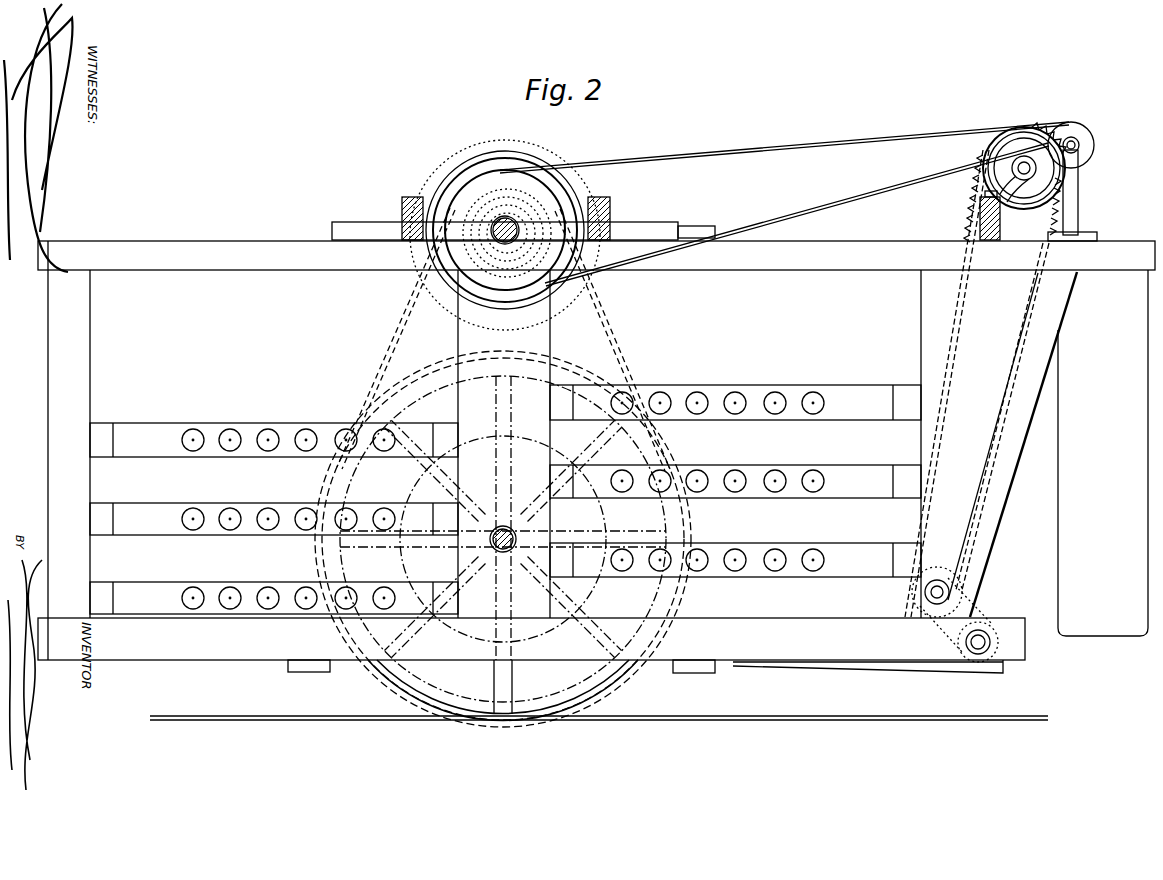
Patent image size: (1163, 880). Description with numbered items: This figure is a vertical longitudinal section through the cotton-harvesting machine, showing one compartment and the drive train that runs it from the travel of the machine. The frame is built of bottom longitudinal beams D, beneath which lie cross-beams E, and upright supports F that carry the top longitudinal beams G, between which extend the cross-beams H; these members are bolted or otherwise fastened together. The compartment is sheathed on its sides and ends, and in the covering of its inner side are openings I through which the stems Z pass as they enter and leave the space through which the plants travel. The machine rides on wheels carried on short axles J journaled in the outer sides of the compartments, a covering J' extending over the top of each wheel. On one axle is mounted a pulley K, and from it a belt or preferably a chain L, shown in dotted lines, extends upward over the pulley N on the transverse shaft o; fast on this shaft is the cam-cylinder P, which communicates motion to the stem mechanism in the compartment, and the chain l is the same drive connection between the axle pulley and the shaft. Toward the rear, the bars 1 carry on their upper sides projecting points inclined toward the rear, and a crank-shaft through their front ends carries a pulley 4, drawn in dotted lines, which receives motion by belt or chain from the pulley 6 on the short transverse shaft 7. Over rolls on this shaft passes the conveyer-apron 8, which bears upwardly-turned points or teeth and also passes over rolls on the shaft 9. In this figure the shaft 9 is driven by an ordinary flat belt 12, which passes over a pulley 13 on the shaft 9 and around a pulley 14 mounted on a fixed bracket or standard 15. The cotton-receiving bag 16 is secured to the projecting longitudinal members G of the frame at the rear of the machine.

The top longitudinal beam G is at (596, 255).
The upright support F is at (484, 450).
The bottom longitudinal beam D is at (531, 645).
The cross-beam E is at (697, 676).
The bar 1 is at (868, 674).
The opening I is at (505, 499).
The stem Z is at (503, 500).
The axle J is at (503, 548).
The covering J' is at (503, 539).
The pulley K is at (503, 529).
The chain L is at (503, 339).
The cam-cylinder P is at (508, 153).
The pulley N is at (507, 233).
The transverse shaft o is at (507, 227).
The cross-beam H is at (506, 209).
The chain l is at (523, 223).
The flat belt 12 is at (680, 149).
The cotton-receiving bag 16 is at (1076, 418).
The conveyer-apron 8 is at (991, 383).
The pulley 13 is at (1024, 166).
The shaft 9 is at (1019, 179).
The pulley 14 is at (1088, 148).
The standard 15 is at (1072, 195).
The short transverse shaft 7 is at (937, 592).
The pulley 6 is at (956, 600).
The pulley 4 is at (990, 638).